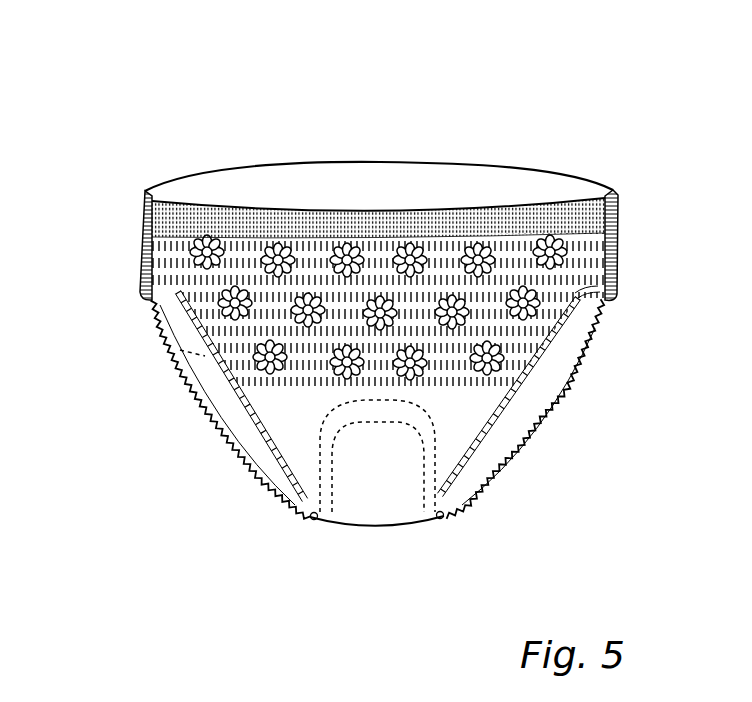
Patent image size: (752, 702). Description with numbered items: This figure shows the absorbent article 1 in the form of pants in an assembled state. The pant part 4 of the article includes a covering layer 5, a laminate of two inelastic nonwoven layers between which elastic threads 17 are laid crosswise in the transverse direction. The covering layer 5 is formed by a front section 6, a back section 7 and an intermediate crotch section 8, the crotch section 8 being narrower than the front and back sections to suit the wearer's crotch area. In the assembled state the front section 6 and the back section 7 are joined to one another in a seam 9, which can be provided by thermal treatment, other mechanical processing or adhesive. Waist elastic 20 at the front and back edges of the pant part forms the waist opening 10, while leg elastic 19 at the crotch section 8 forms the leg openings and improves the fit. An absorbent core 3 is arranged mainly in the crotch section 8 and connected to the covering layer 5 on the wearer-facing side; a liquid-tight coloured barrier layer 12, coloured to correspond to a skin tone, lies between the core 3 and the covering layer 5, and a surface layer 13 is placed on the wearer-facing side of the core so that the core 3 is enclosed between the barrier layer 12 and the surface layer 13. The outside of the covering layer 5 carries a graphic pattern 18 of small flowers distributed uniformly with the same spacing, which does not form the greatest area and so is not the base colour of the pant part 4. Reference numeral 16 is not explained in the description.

The absorbent article 1 is at (530, 100).
The absorbent core 3 is at (400, 498).
The pant part 4 is at (500, 319).
The covering layer 5 is at (470, 400).
The front section 6 is at (202, 292).
The back section 7 is at (175, 352).
The crotch section 8 is at (465, 442).
The seam 9 is at (137, 222).
The waist opening 10 is at (252, 190).
The barrier layer 12 is at (282, 507).
The surface layer 13 is at (287, 453).
The leg elastic threads 16 is at (252, 378).
The elastic threads 17 is at (567, 270).
The graphic pattern 18 is at (352, 250).
The leg elastic 19 is at (337, 305).
The waist elastic 20 is at (580, 200).